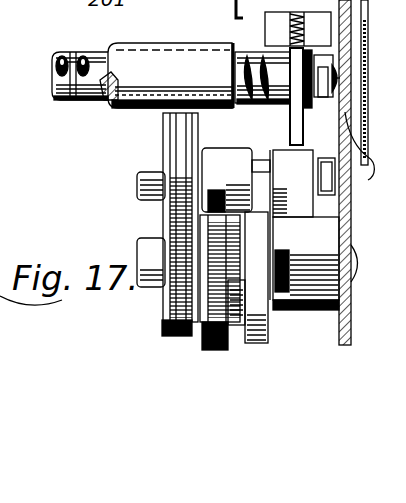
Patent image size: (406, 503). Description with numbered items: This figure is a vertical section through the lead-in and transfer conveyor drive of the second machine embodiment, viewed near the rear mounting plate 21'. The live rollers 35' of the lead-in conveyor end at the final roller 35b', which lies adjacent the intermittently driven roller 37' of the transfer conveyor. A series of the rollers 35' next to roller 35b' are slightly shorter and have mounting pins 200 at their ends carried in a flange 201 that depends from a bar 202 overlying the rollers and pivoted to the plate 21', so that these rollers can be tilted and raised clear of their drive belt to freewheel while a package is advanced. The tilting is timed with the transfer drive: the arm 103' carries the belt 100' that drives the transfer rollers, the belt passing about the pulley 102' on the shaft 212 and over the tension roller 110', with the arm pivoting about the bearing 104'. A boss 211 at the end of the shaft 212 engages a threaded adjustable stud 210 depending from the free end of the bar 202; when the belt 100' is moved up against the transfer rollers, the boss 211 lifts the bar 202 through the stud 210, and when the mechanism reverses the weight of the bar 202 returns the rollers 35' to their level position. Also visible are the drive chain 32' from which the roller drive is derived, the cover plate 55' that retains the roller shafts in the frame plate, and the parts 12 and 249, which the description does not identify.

The live rollers 35' is at (54, 78).
The final roller 35b' is at (72, 97).
The transfer conveyor roller 37' is at (166, 93).
The belt 100' is at (147, 224).
The shaft 212 is at (140, 183).
The pulley 102' is at (132, 248).
The tension roller 110' is at (135, 324).
The drive chain 32' is at (181, 284).
The threaded adjustable stud 210 is at (290, 128).
The arm 103' is at (236, 180).
The boss 211 is at (288, 228).
The bar 202 is at (265, 26).
The arm 249 is at (192, 6).
The plate 12 is at (383, 82).
The flange 201 is at (331, 52).
The mounting plate 21' is at (368, 80).
The cover plate 55' is at (375, 135).
The mounting pins 200 is at (367, 172).
The pivot bearing 104' is at (378, 255).